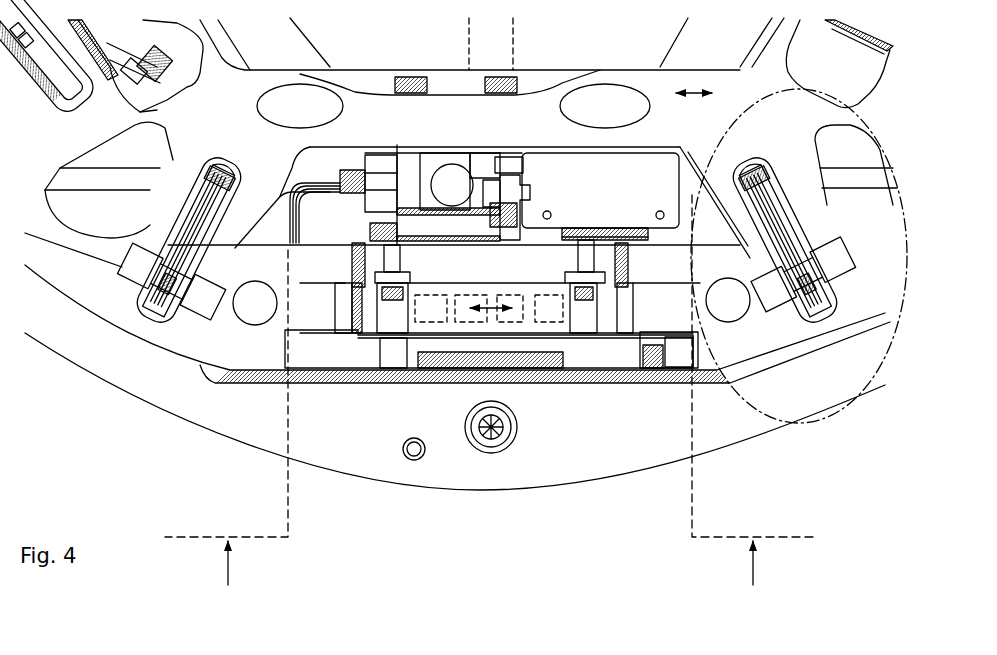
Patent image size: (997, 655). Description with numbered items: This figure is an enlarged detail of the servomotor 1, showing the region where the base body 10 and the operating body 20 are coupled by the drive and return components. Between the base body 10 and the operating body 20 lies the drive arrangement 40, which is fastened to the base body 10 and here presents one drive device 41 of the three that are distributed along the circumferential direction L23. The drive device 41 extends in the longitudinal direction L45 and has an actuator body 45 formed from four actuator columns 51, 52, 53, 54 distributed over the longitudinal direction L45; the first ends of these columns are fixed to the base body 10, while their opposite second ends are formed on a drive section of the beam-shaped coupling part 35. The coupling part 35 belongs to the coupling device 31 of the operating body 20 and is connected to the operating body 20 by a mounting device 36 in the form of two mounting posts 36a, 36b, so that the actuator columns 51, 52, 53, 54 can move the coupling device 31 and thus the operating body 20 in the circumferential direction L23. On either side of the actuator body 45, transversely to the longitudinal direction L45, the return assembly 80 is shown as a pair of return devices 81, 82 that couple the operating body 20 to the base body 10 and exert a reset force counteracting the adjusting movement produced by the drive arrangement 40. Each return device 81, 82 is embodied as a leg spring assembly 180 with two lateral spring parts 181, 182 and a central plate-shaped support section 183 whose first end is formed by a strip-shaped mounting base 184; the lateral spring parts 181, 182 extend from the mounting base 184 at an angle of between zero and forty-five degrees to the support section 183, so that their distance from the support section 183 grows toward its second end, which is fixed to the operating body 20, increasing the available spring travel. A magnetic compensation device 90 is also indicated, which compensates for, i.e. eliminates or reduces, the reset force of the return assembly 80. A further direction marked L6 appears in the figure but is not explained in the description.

The servomotor 1 is at (511, 536).
The base body 10 is at (577, 478).
The operating body 20 is at (151, 380).
The coupling device 31 is at (551, 236).
The beam-shaped coupling part 35 is at (511, 292).
The mounting device 36 is at (606, 261).
The mounting post 36a is at (597, 260).
The mounting post 36b is at (390, 262).
The drive arrangement 40 is at (368, 434).
The drive device 41 is at (433, 315).
The actuator body 45 is at (431, 328).
The actuator column 51 is at (553, 318).
The actuator column 52 is at (517, 323).
The actuator column 53 is at (468, 324).
The actuator column 54 is at (465, 325).
The return assembly 80 is at (228, 138).
The return device 81 is at (778, 182).
The return device 82 is at (224, 158).
The magnetic compensation device 90 is at (248, 342).
The leg spring assembly 180 is at (163, 227).
The lateral spring part 181 is at (208, 247).
The lateral spring part 182 is at (185, 222).
The central plate-shaped support section 183 is at (167, 300).
The strip-shaped mounting base 184 is at (217, 175).
The length L6 is at (491, 564).
The circumferential direction L23 is at (692, 107).
The longitudinal direction L45 is at (497, 298).